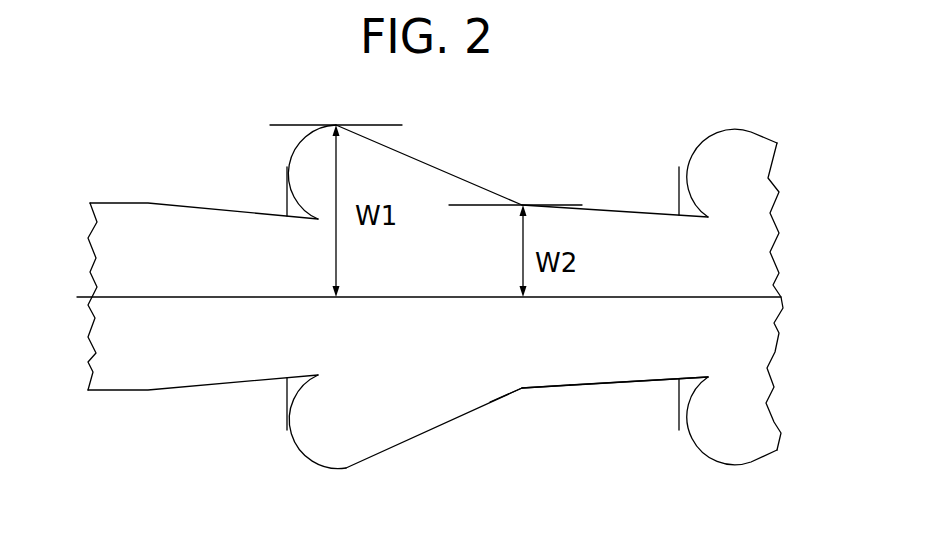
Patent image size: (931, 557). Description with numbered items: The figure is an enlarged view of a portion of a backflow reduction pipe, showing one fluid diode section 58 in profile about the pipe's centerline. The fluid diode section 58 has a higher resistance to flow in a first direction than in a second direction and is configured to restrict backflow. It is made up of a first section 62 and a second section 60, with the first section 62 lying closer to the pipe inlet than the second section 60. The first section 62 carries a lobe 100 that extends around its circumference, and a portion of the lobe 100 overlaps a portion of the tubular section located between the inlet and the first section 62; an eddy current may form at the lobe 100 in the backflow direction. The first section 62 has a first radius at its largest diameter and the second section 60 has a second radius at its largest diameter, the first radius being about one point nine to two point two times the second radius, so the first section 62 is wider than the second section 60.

The lobe 100 is at (310, 436).
The first section 62 is at (352, 427).
The fluid diode section 58 is at (493, 385).
The second section 60 is at (613, 367).